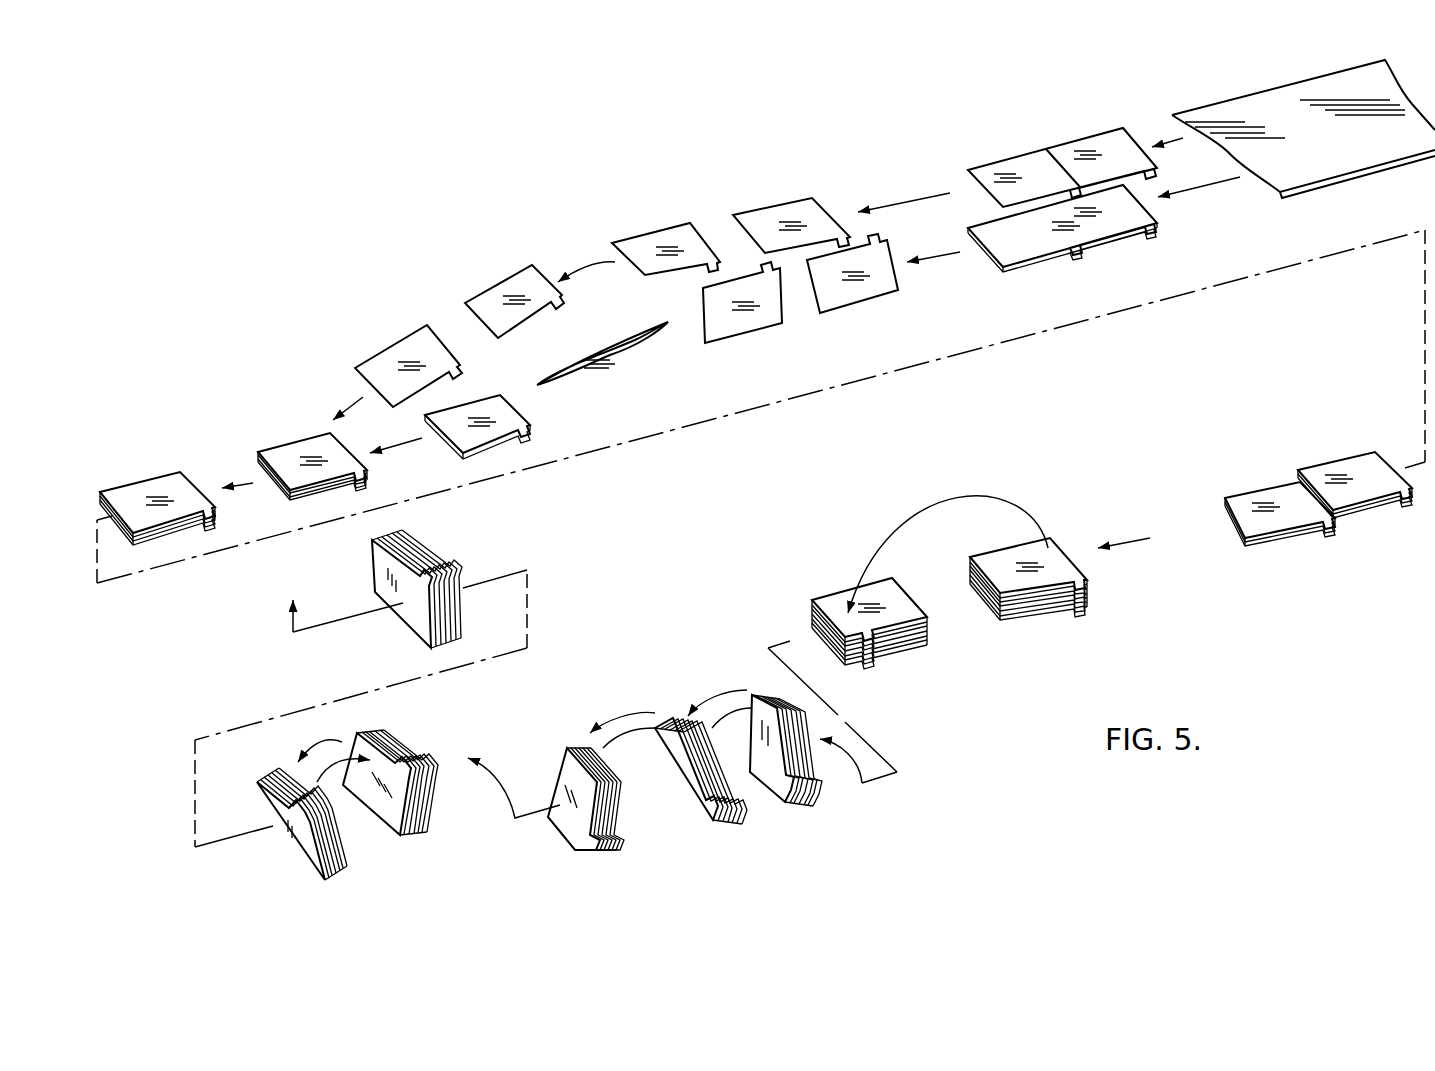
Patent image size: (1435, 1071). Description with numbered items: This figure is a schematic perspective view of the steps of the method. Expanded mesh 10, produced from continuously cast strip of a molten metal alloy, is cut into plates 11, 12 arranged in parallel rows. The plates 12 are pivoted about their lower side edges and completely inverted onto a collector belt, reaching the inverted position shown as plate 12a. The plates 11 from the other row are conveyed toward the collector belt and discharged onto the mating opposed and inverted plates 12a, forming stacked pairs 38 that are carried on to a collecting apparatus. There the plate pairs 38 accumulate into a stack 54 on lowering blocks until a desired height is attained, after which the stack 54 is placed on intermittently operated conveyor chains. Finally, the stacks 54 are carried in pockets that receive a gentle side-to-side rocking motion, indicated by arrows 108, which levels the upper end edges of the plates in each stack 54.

The expanded mesh 10 is at (1267, 108).
The plate 11 is at (1080, 150).
The plate 12 is at (1105, 245).
The inverted plate 12a is at (510, 428).
The stacked pair 38 is at (297, 458).
The stack 54 is at (1055, 565).
The arrows 108 is at (626, 712).